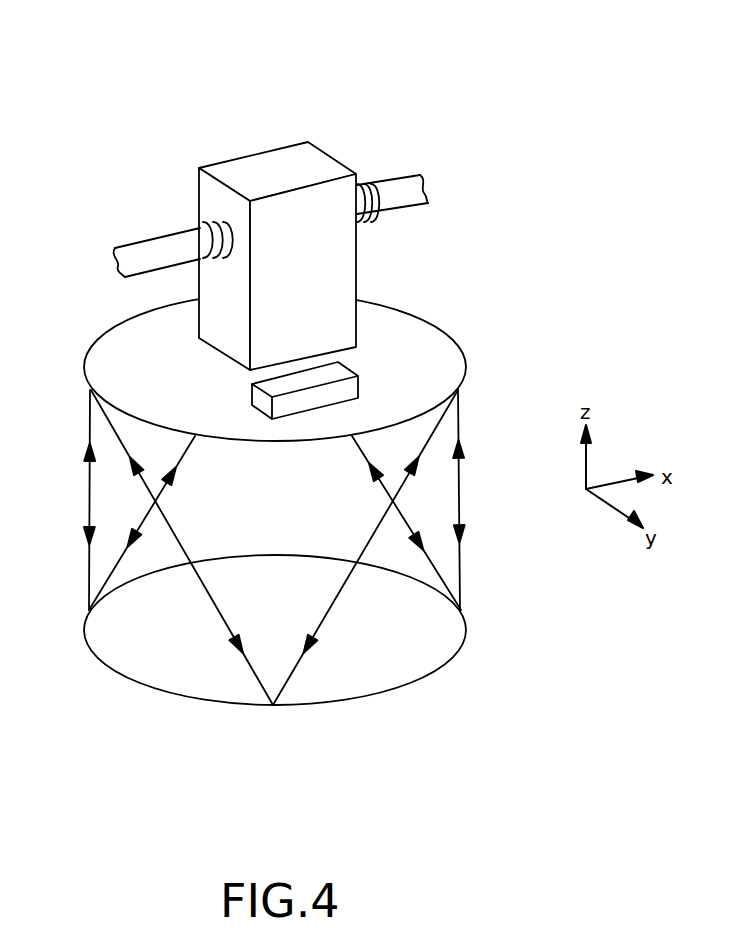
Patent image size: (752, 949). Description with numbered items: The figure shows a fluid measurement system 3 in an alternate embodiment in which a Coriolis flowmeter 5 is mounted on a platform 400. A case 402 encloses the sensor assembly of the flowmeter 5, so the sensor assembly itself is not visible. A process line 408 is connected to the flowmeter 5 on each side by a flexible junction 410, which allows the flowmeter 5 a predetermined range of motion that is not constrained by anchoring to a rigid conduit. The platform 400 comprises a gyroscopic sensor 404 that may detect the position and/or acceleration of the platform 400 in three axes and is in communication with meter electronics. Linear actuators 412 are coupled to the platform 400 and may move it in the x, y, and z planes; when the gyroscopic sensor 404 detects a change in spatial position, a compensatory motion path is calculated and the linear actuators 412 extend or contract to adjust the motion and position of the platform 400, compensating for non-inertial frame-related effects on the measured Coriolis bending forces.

The fluid measurement system 3 is at (86, 84).
The flowmeter 5 is at (281, 163).
The platform 400 is at (104, 362).
The case 402 is at (343, 267).
The gyroscopic sensor 404 is at (340, 377).
The process line 408 is at (185, 240).
The flexible junction 410 is at (205, 220).
The linear actuators 412 is at (493, 447).